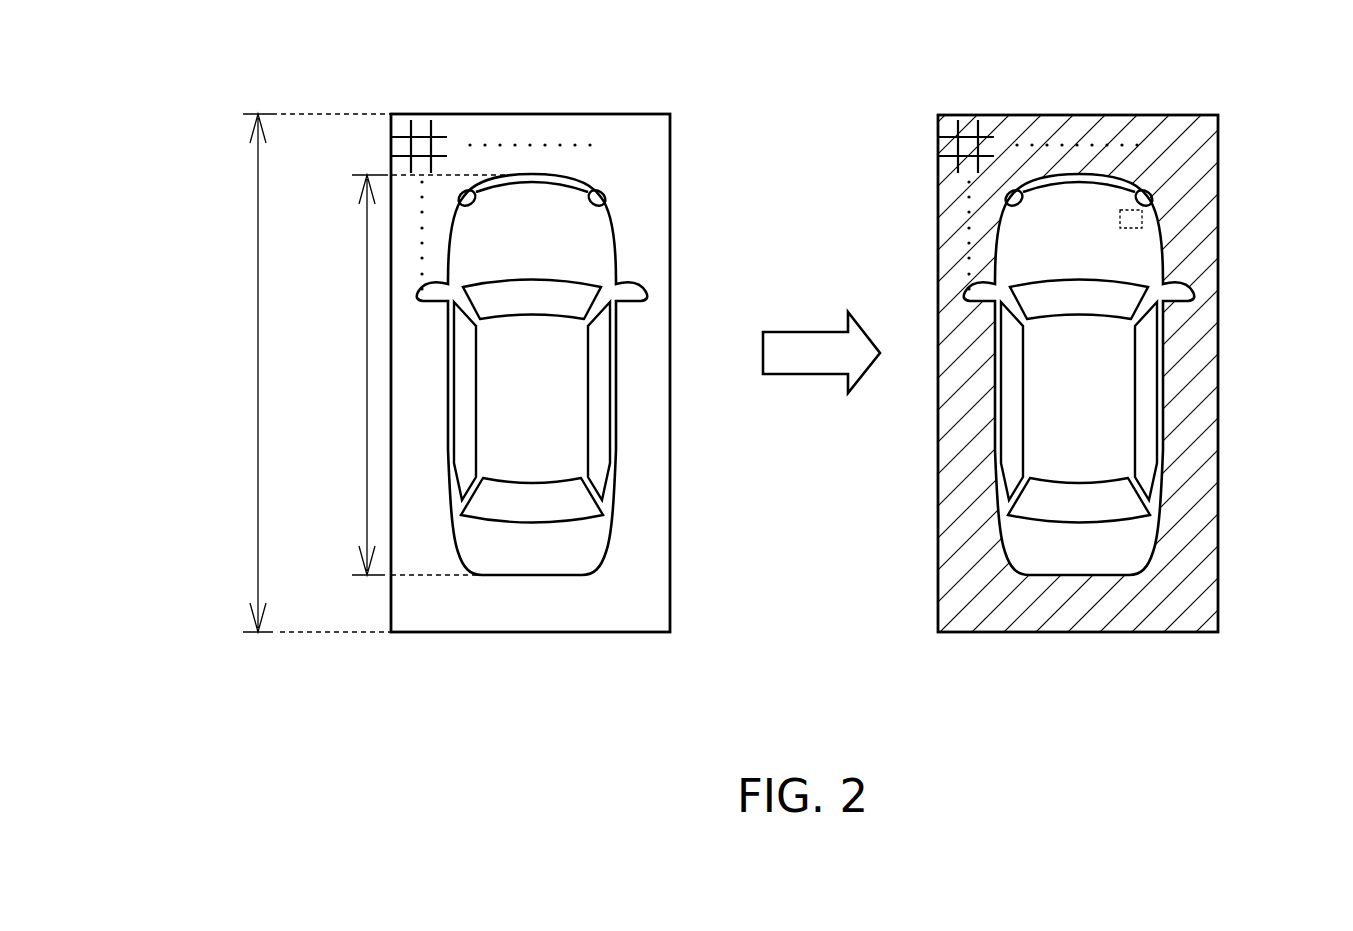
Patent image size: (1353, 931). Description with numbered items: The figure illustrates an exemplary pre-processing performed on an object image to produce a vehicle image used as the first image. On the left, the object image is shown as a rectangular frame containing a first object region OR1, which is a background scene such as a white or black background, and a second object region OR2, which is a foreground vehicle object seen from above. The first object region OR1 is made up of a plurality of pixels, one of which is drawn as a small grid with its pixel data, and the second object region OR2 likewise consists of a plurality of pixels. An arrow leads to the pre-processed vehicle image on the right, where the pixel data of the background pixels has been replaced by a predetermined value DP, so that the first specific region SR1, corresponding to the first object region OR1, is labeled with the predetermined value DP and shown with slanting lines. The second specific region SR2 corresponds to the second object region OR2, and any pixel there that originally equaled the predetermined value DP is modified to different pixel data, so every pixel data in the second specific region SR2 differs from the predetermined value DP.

The first object region OR1 is at (670, 222).
The second object region OR2 is at (617, 333).
The predetermined value DP is at (953, 127).
The first specific region SR1 is at (1218, 135).
The second specific region SR2 is at (1165, 333).